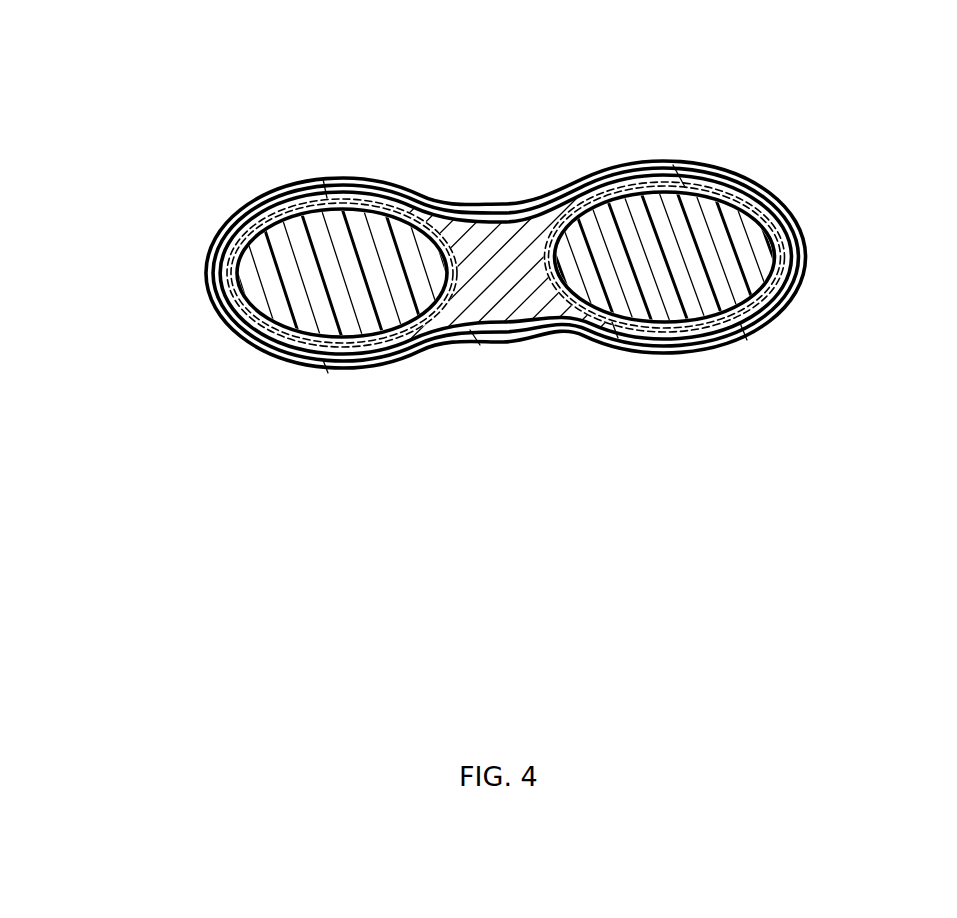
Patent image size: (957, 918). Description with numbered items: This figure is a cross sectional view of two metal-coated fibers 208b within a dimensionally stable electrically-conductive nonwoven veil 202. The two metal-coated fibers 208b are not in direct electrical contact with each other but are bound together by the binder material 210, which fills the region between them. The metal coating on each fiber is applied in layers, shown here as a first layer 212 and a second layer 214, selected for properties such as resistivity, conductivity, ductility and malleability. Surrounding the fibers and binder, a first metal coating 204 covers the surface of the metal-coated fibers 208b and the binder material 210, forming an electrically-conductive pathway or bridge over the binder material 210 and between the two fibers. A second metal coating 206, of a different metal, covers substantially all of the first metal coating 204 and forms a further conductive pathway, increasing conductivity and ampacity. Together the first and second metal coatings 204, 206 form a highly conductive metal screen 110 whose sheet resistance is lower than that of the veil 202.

The highly conductive metal screen 110 is at (688, 447).
The dimensionally stable electrically-conductive nonwoven veil 202 is at (566, 447).
The first metal coating 204 is at (423, 193).
The second metal coating 206 is at (557, 198).
The metal-coated fibers 208b is at (227, 212).
The binder material 210 is at (520, 250).
The first layer 212 is at (263, 268).
The second layer 214 is at (272, 190).